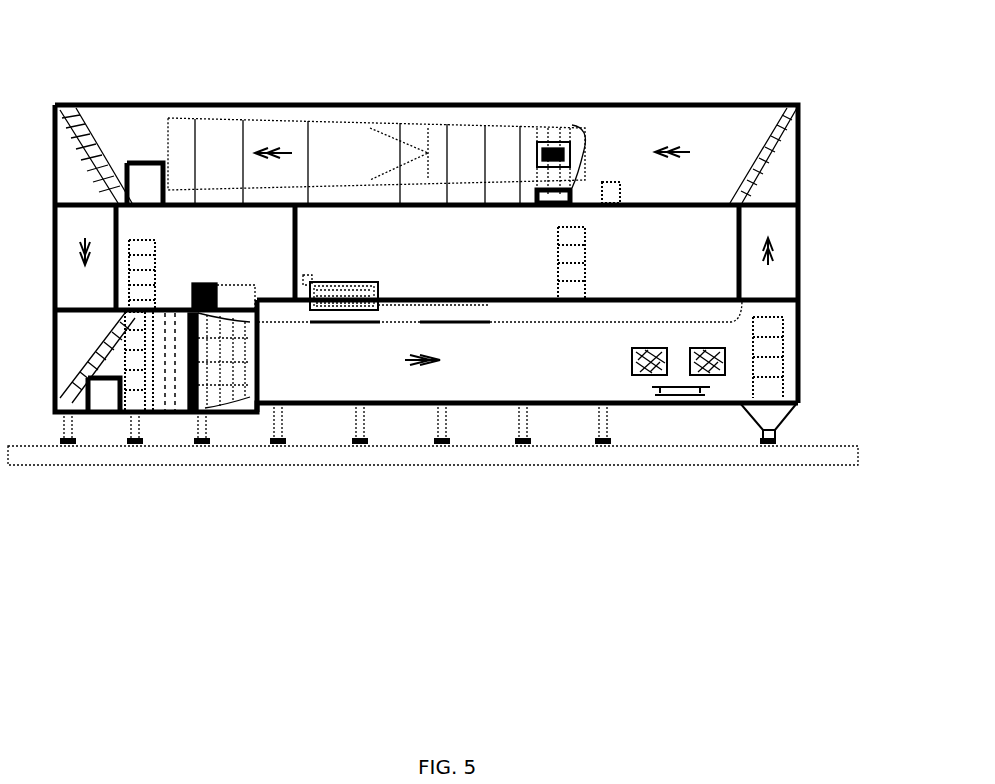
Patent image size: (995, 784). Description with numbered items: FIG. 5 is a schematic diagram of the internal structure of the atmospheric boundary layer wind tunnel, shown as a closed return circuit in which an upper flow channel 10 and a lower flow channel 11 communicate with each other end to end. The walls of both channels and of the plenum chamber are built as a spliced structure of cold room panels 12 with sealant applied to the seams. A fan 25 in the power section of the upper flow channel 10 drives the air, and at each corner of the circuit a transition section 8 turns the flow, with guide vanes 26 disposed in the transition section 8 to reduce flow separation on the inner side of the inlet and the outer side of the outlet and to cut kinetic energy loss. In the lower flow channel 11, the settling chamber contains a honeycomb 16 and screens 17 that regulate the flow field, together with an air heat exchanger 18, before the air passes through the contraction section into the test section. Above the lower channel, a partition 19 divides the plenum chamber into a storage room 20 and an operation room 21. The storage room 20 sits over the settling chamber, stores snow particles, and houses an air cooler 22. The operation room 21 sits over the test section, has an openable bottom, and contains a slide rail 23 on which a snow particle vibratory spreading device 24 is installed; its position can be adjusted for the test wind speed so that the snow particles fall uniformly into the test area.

The transition section 8 is at (62, 108).
The upper flow channel 10 is at (800, 175).
The lower flow channel 11 is at (800, 350).
The cold room panels 12 is at (460, 105).
The honeycomb 16 is at (122, 400).
The screens 17 is at (163, 405).
The air heat exchanger 18 is at (200, 405).
The partition 19 is at (297, 265).
The storage room 20 is at (237, 283).
The operation room 21 is at (522, 282).
The air cooler 22 is at (204, 283).
The slide rail 23 is at (452, 297).
The snow particle vibratory spreading device 24 is at (328, 285).
The fan 25 is at (552, 133).
The guide vanes 26 is at (785, 112).